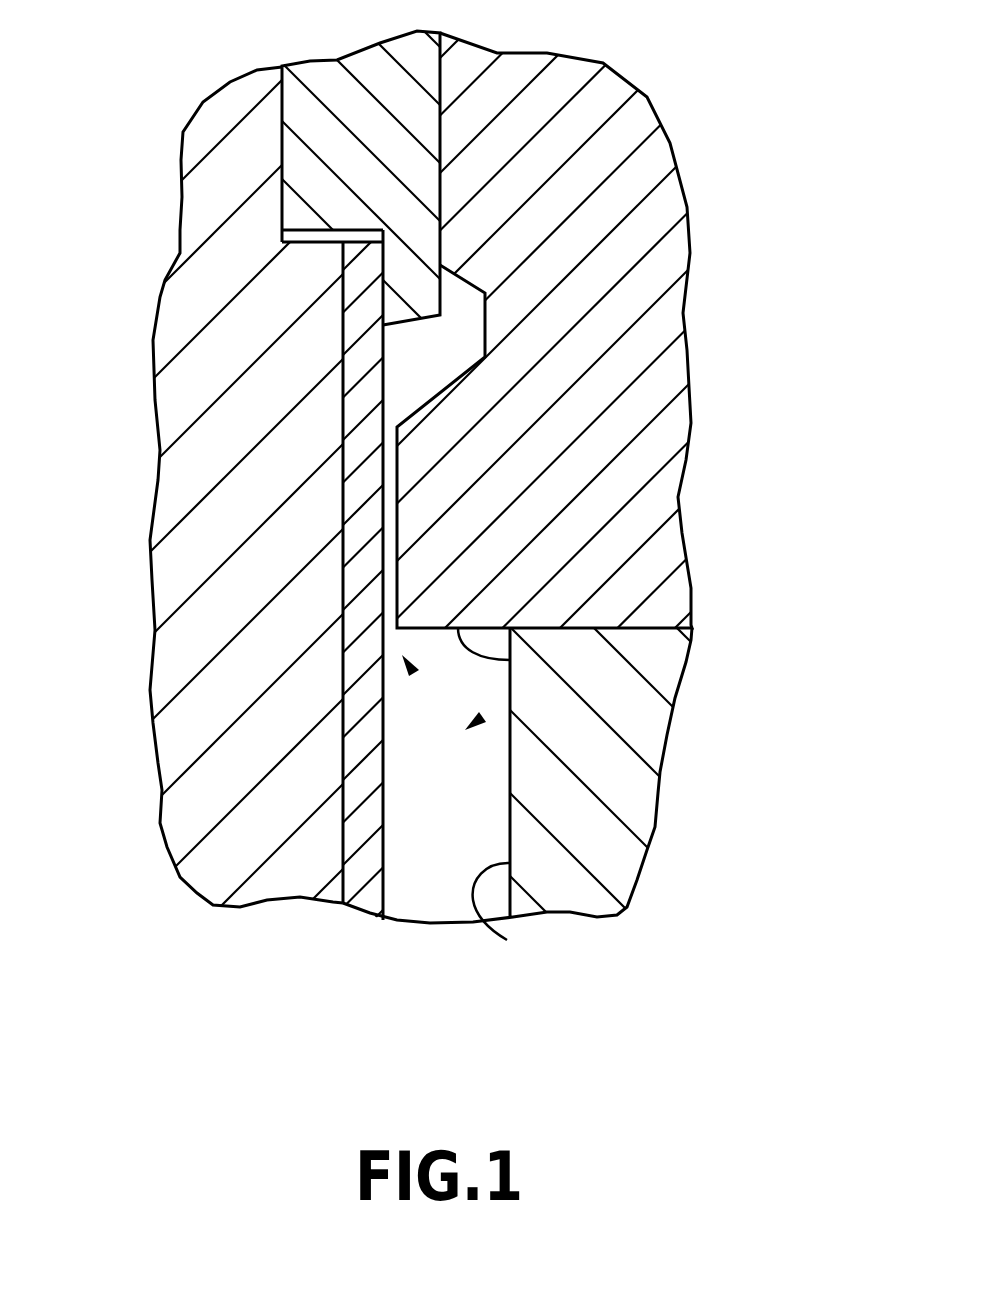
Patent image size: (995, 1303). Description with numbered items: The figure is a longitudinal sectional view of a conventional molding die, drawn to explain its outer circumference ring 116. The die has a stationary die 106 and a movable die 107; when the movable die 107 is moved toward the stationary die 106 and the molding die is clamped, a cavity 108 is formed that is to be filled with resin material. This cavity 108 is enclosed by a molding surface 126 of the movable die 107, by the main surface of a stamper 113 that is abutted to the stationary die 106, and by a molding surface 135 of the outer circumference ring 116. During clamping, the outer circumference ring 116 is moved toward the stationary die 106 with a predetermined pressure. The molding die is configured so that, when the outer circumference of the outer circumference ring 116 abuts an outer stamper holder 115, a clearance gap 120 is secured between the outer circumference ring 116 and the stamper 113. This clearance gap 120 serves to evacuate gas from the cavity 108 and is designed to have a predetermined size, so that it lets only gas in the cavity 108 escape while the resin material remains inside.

The stationary die 106 is at (200, 832).
The movable die 107 is at (620, 770).
The cavity 108 is at (482, 718).
The stamper 113 is at (370, 793).
The outer stamper holder 115 is at (307, 122).
The outer circumference ring 116 is at (671, 401).
The clearance gap 120 is at (414, 673).
The molding surface of the movable die 126 is at (507, 940).
The molding surface of the outer circumference ring 135 is at (547, 660).